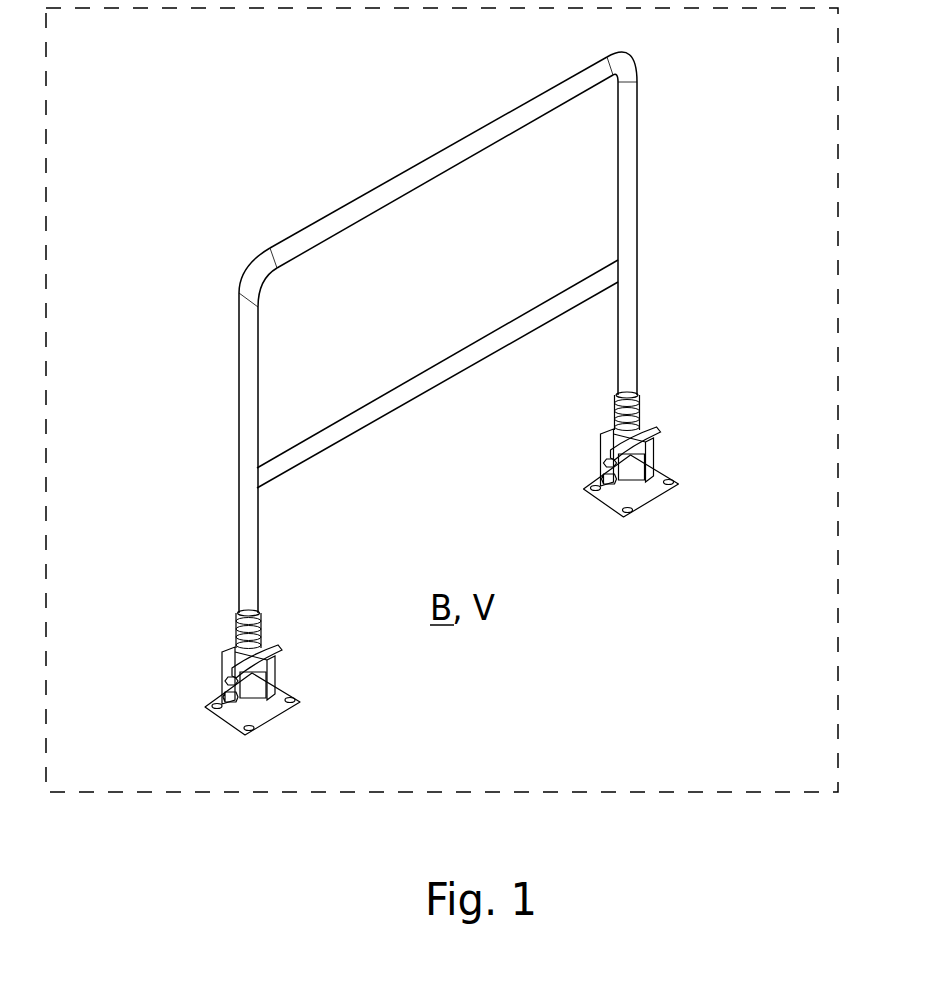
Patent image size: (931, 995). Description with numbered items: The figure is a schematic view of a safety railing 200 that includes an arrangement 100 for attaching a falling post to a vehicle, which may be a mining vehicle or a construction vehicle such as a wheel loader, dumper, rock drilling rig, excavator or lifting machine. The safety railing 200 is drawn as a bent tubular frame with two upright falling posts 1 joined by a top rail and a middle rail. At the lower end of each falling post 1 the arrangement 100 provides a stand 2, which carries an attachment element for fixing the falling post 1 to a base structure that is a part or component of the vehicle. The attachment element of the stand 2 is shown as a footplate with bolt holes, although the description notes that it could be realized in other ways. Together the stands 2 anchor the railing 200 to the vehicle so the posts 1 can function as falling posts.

The arrangement for attaching a falling post 100 is at (723, 211).
The safety railing 200 is at (273, 190).
The falling post 1 is at (247, 551).
The stand 2 is at (207, 705).